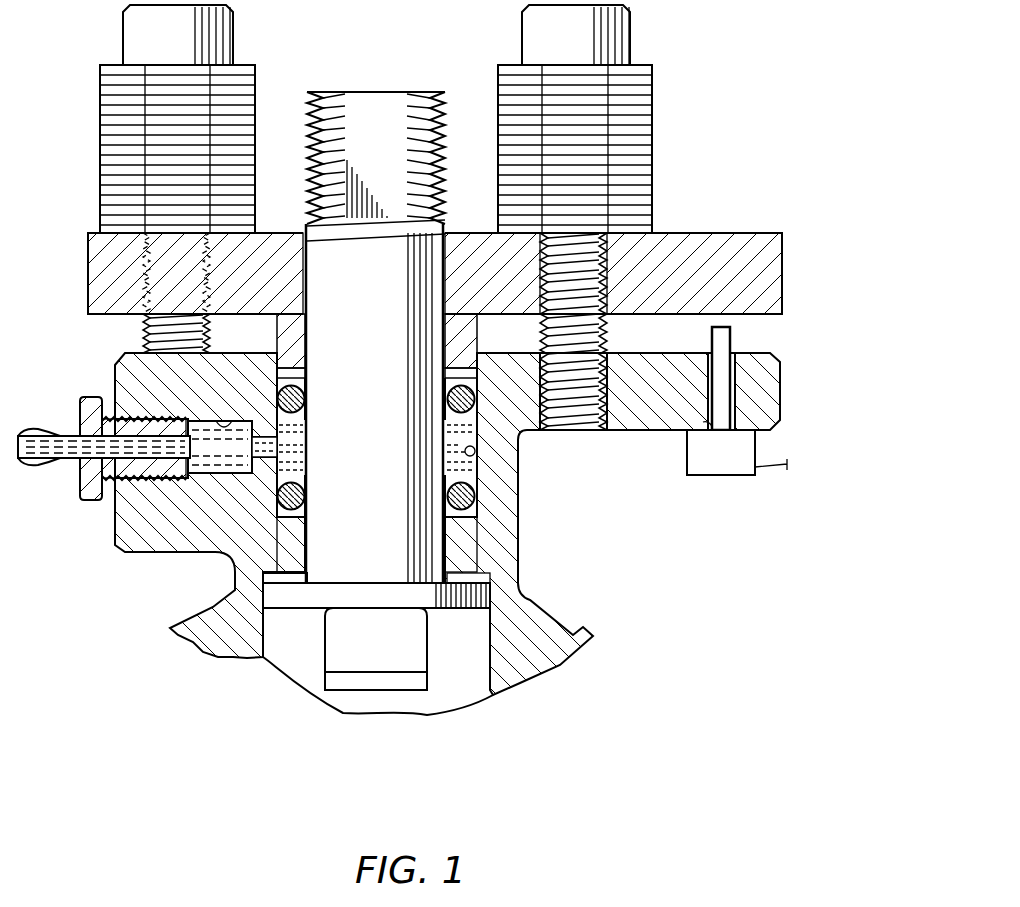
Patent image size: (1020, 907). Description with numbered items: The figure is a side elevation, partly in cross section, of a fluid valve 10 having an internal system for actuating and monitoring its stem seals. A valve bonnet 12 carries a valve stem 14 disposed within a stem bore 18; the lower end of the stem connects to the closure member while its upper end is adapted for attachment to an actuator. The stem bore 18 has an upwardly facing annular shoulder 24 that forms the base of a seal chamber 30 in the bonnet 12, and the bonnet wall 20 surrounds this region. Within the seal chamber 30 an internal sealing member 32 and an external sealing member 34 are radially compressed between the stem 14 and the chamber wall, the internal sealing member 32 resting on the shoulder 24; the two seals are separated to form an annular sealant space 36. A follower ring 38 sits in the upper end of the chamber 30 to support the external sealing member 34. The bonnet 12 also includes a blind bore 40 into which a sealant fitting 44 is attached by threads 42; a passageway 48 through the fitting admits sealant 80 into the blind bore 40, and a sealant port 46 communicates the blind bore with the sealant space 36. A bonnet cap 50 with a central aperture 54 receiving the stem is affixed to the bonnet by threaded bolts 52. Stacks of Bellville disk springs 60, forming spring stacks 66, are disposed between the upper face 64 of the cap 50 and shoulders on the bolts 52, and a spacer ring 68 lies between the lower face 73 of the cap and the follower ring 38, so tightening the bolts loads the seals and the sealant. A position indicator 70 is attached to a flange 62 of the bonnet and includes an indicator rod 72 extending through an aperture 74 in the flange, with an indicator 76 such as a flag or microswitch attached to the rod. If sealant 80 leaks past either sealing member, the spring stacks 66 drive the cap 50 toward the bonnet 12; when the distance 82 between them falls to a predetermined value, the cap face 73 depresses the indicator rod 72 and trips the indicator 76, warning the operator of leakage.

The fluid valve 10 is at (785, 188).
The valve bonnet 12 is at (520, 533).
The valve stem 14 is at (345, 651).
The stem bore 18 is at (488, 643).
The housing wall 20 is at (460, 550).
The annular shoulder 24 is at (297, 528).
The seal chamber 30 is at (470, 457).
The internal sealing member 32 is at (305, 492).
The external sealing member 34 is at (303, 395).
The sealant space 36 is at (300, 462).
The follower ring 38 is at (303, 373).
The blind bore 40 is at (228, 421).
The threads 42 is at (150, 480).
The sealant fitting 44 is at (92, 405).
The sealant port 46 is at (278, 446).
The passageway 48 is at (32, 431).
The bonnet cap 50 is at (778, 266).
The threaded bolts 52 is at (623, 33).
The central aperture 54 is at (310, 283).
The springs 60 is at (652, 127).
The flange 62 is at (778, 407).
The upper face of cap 64 is at (703, 232).
The spring stacks 66 is at (645, 91).
The spacer ring 68 is at (300, 343).
The position indicator 70 is at (700, 457).
The indicator rod 72 is at (727, 383).
The lower face of bonnet cap 73 is at (752, 316).
The aperture 74 is at (730, 423).
The indicator 76 is at (787, 467).
The sealant 80 is at (300, 428).
The distance 82 is at (790, 313).